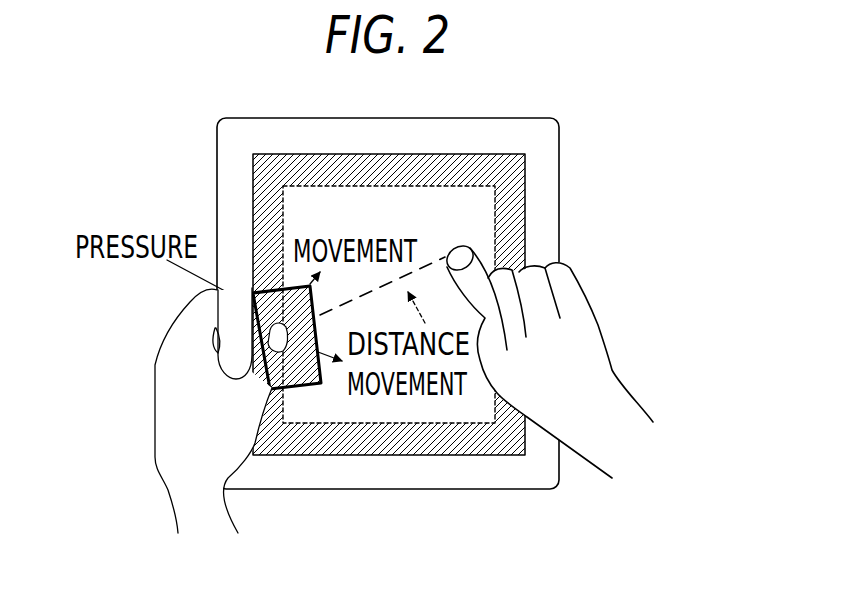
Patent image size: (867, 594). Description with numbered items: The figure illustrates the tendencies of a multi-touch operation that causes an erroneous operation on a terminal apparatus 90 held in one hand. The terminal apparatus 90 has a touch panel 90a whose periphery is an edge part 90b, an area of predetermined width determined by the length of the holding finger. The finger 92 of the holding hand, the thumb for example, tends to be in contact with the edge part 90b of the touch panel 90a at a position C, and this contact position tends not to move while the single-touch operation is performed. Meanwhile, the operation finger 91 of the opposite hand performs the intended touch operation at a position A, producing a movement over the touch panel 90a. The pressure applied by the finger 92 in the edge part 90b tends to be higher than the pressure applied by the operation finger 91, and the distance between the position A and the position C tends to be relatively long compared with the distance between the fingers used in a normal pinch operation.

The terminal apparatus 90 is at (600, 123).
The touch panel 90a is at (263, 201).
The edge part 90b is at (519, 191).
The operation finger 91 is at (520, 253).
The finger 92 is at (290, 388).
The position A is at (453, 243).
The position C is at (318, 383).